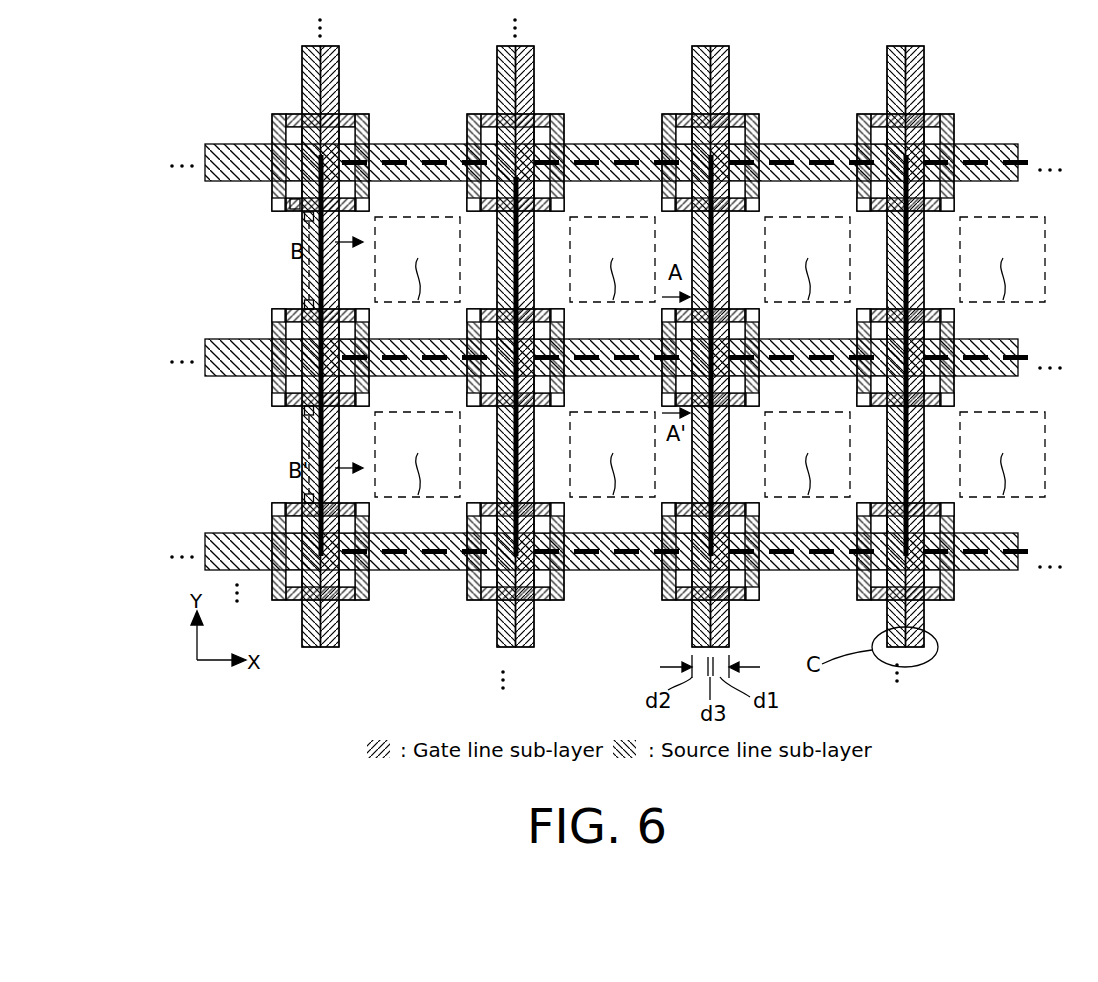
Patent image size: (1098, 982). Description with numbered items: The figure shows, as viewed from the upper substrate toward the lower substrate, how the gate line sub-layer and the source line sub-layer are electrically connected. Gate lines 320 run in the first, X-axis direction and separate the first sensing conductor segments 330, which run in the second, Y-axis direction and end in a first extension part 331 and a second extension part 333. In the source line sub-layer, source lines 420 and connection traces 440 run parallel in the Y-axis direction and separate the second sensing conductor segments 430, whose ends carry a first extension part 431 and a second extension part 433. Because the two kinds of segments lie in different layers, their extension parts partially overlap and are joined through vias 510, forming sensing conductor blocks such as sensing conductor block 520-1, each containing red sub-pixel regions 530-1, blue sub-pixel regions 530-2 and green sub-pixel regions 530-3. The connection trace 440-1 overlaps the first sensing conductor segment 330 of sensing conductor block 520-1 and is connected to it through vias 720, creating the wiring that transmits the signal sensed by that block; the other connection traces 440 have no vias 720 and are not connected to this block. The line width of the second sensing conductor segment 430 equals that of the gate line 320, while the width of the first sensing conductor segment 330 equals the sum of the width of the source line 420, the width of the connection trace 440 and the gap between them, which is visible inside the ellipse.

The first sensing conductor segment 330 is at (583, 368).
The gate line 320 is at (298, 603).
The source line 420 is at (330, 234).
The connection trace 440 is at (310, 229).
The connection trace 440-1 is at (304, 650).
The second sensing conductor segment 430 is at (217, 378).
The first extension part 431 is at (755, 589).
The second extension part 433 is at (276, 331).
The first extension part 331 is at (351, 604).
The second extension part 333 is at (494, 316).
The via 510 is at (566, 211).
The sensing conductor block 520-1 is at (787, 548).
The red sub-pixel region 530-1 is at (710, 374).
The blue sub-pixel region 530-2 is at (612, 374).
The green sub-pixel region 530-3 is at (807, 374).
The via 720 is at (294, 204).